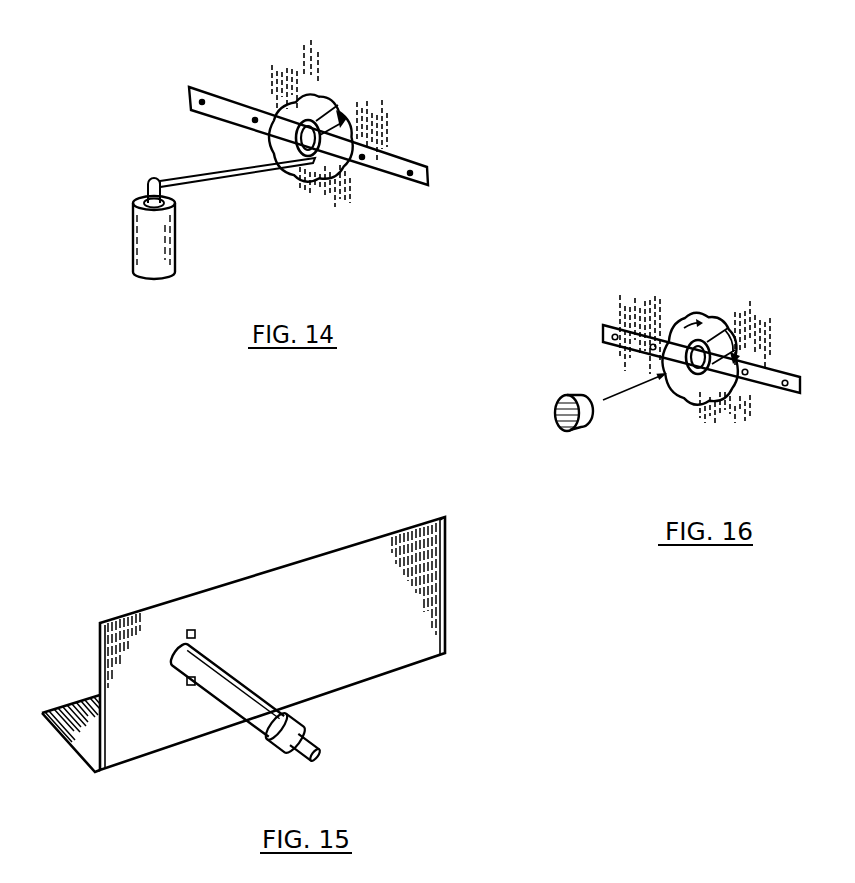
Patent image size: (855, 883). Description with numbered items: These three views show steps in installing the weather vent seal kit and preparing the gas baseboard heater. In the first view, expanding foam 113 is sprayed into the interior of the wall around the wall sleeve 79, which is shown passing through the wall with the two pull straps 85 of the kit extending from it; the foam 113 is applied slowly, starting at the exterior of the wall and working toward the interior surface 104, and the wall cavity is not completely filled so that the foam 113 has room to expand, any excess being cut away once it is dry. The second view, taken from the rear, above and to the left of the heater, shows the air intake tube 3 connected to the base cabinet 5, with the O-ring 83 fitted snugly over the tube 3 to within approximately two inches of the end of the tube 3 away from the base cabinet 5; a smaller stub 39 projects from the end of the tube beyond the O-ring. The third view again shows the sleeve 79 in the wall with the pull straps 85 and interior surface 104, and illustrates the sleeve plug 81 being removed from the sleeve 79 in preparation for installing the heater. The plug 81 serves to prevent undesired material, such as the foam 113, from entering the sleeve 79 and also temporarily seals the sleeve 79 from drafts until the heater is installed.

In FIG. 15, the air intake tube 3 is at (222, 673).
In FIG. 15, the base cabinet 5 is at (302, 618).
In FIG. 15, the stub shaft 39 is at (318, 743).
In FIG. 14, the sleeve 79 is at (330, 110).
In FIG. 16, the sleeve 79 is at (710, 317).
In FIG. 16, the sleeve plug 81 is at (587, 417).
In FIG. 15, the O-ring 83 is at (290, 715).
In FIG. 14, the pull straps 85 is at (227, 108).
In FIG. 16, the pull straps 85 is at (773, 380).
In FIG. 14, the interior surface 104 is at (380, 125).
In FIG. 16, the interior surface 104 is at (628, 308).
In FIG. 14, the expanding foam 113 is at (155, 247).
In FIG. 16, the expanding foam 113 is at (673, 313).